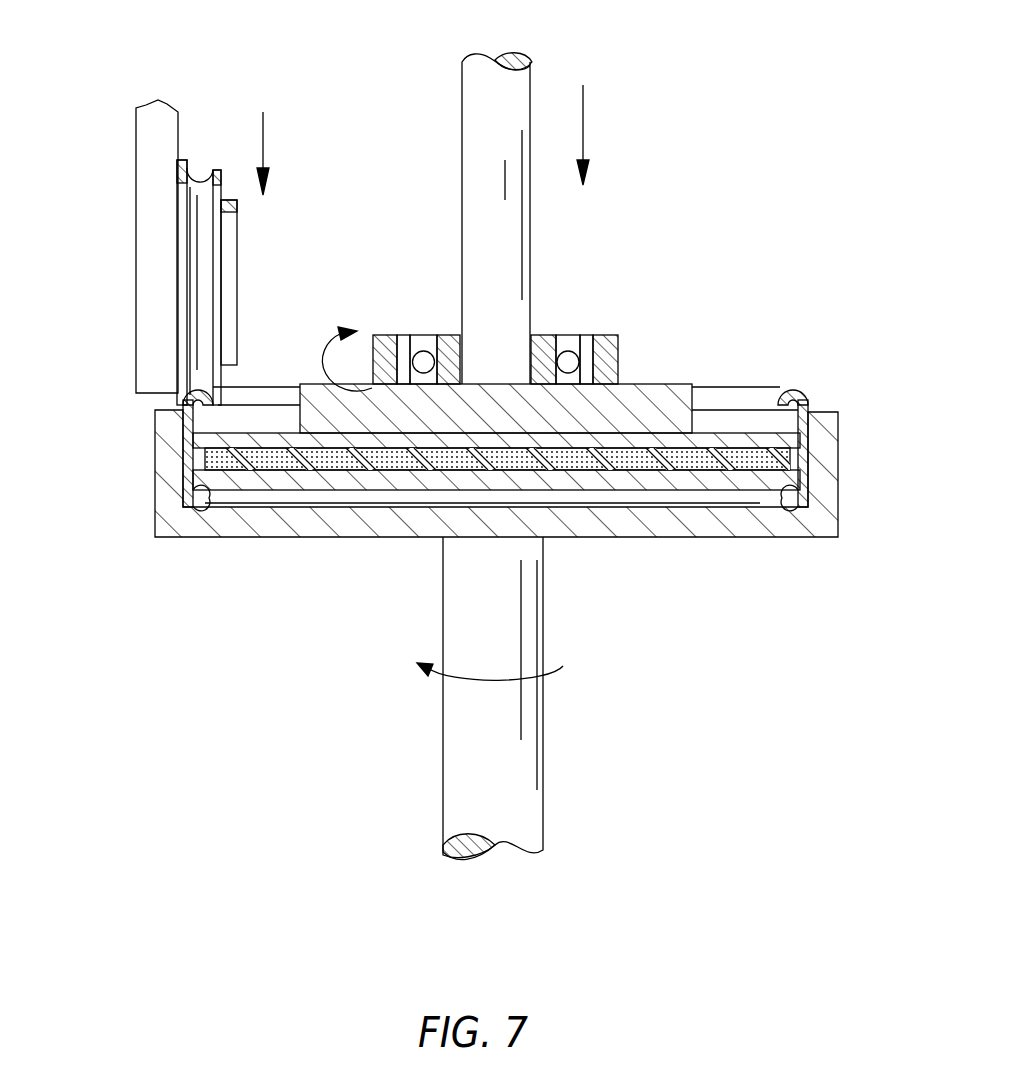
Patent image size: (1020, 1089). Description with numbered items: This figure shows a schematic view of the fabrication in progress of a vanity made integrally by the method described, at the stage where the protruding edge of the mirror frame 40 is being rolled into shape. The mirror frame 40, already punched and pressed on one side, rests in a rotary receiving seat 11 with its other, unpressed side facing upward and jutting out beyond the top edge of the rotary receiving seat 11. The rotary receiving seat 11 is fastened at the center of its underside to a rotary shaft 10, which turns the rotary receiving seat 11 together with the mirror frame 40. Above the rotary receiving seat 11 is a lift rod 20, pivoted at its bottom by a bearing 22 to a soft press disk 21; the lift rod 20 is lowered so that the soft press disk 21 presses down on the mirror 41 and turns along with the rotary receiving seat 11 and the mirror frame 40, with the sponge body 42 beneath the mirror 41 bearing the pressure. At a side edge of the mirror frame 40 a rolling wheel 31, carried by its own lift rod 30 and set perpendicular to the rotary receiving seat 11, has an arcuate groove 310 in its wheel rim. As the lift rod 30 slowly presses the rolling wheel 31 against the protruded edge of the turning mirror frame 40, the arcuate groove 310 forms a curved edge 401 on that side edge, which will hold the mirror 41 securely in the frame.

The rotary shaft 10 is at (510, 641).
The rotary receiving seat 11 is at (832, 479).
The lift rod 20 is at (510, 115).
The soft press disk 21 is at (612, 358).
The bearing 22 is at (561, 345).
The lift rod 30 is at (160, 147).
The rolling wheel 31 is at (223, 190).
The arcuate groove 310 is at (203, 178).
The mirror frame 40 is at (840, 422).
The curved edge 401 is at (800, 393).
The mirror 41 is at (731, 447).
The sponge body 42 is at (771, 500).